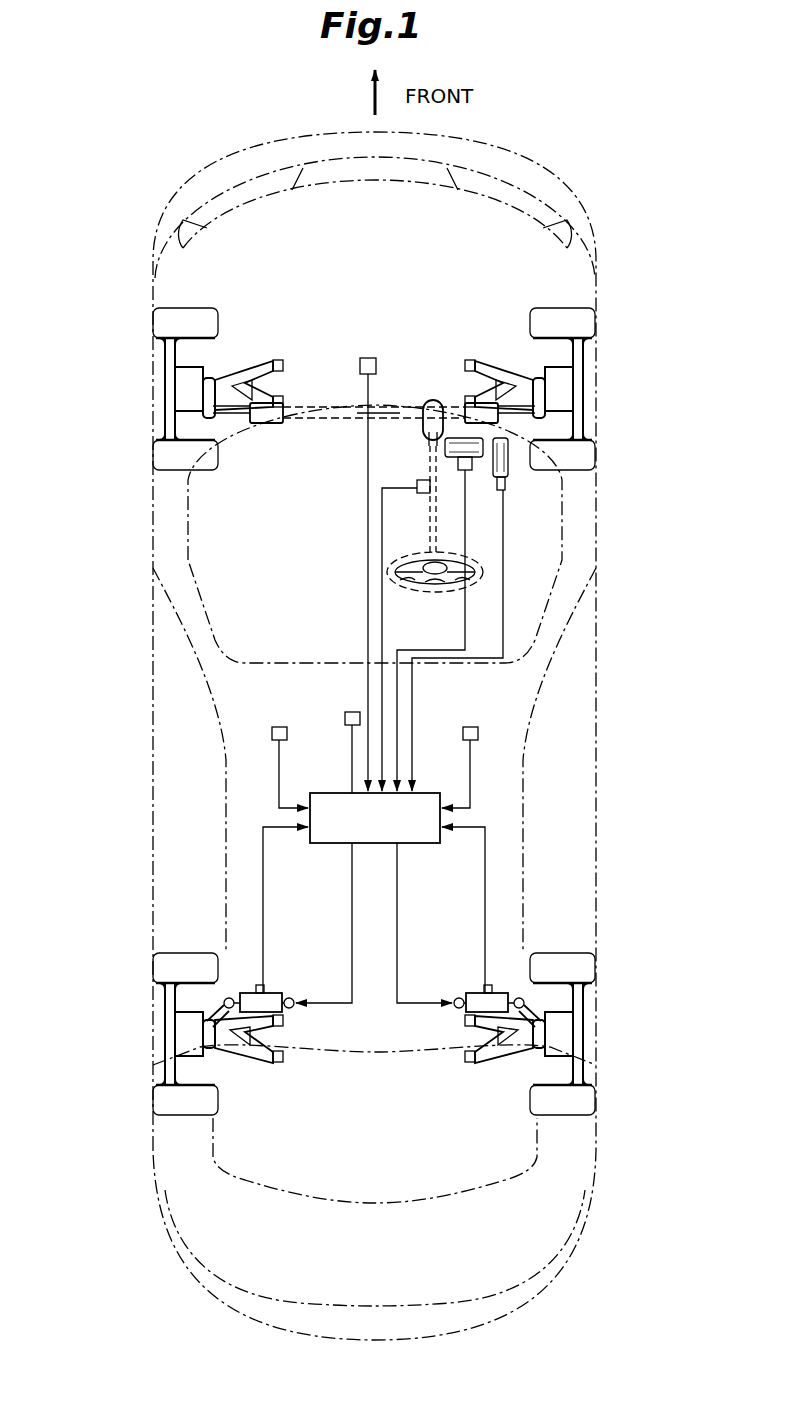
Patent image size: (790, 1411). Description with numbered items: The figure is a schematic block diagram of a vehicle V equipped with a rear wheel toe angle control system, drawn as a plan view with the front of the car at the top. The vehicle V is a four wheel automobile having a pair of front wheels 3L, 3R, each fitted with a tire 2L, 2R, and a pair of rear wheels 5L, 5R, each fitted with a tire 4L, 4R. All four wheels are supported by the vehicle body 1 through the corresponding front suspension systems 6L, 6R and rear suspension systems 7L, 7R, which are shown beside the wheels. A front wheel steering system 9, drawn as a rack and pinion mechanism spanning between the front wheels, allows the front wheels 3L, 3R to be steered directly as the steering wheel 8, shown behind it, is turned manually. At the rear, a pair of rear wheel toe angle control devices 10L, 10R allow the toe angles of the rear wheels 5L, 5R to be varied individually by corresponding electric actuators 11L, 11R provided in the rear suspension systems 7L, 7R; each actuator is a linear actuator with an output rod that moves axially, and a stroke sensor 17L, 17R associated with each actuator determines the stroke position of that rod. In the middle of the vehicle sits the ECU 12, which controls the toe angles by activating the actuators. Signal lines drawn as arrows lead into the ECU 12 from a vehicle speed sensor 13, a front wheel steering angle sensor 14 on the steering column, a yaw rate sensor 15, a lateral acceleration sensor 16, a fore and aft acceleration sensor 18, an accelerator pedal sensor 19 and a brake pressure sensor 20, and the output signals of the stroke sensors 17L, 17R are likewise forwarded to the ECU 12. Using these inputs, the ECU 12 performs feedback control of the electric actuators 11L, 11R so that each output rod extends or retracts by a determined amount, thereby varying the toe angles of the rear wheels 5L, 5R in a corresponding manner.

The vehicle body 1 is at (598, 252).
The vehicle V is at (607, 125).
The tire 2L is at (165, 455).
The tire 2R is at (585, 452).
The front wheel 3L is at (165, 350).
The front wheel 3R is at (586, 348).
The tire 4L is at (168, 1108).
The tire 4R is at (582, 1108).
The rear wheel 5L is at (175, 1022).
The rear wheel 5R is at (588, 1022).
The front suspension system 6L is at (223, 376).
The front suspension system 6R is at (525, 376).
The rear suspension system 7L is at (221, 1058).
The rear suspension system 7R is at (524, 1058).
The steering wheel 8 is at (431, 592).
The front wheel steering system 9 is at (395, 407).
The rear wheel toe angle control device 10L is at (223, 1003).
The rear wheel toe angle control device 10R is at (527, 1003).
The electric actuator 11L is at (257, 993).
The electric actuator 11R is at (497, 993).
The ECU 12 is at (322, 797).
The vehicle speed sensor 13 is at (367, 358).
The front wheel steering angle sensor 14 is at (420, 480).
The yaw rate sensor 15 is at (280, 727).
The lateral acceleration sensor 16 is at (470, 727).
The stroke sensor 17L is at (265, 988).
The stroke sensor 17R is at (484, 988).
The fore and aft acceleration sensor 18 is at (350, 712).
The accelerator pedal sensor 19 is at (504, 490).
The brake pressure sensor 20 is at (468, 471).